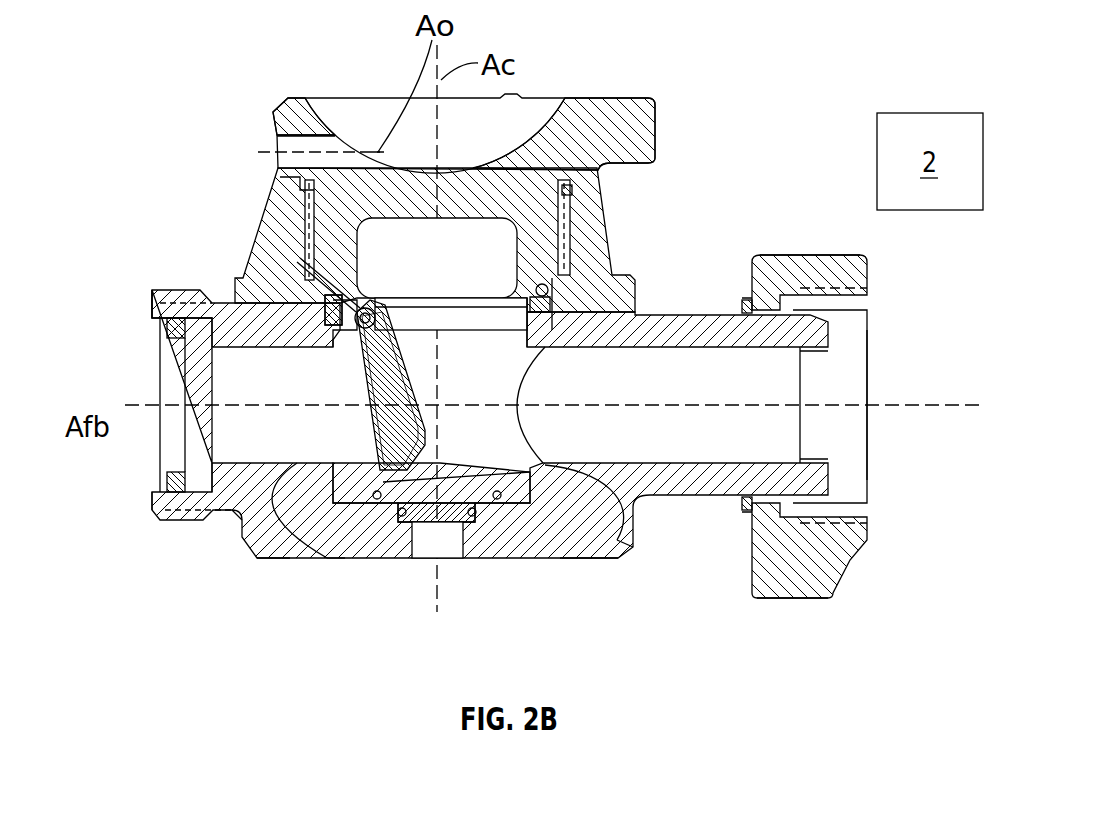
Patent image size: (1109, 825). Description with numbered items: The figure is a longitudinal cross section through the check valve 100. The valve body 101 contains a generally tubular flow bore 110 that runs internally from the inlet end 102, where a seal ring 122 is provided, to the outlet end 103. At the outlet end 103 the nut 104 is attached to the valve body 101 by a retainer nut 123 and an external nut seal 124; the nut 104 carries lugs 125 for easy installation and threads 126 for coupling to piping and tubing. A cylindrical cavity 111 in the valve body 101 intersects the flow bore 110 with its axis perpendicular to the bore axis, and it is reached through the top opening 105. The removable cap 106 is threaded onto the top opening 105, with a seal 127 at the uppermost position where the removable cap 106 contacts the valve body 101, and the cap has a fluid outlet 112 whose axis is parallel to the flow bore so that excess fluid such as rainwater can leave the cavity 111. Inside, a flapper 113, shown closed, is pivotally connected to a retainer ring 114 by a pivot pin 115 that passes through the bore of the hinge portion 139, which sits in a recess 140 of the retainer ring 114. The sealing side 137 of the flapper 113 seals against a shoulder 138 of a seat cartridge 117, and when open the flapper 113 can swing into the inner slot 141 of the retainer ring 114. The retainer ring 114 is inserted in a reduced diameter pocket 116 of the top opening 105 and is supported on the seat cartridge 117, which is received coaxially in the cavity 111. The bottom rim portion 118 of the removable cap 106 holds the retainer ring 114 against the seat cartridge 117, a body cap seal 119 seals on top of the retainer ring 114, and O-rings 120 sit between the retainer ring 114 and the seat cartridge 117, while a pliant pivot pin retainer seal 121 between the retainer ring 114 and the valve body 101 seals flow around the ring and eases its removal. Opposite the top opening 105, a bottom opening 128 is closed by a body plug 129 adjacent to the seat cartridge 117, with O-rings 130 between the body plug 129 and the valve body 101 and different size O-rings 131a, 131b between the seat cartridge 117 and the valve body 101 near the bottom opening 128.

The check valve 100 is at (744, 82).
The valve body 101 is at (647, 497).
The inlet end 102 is at (150, 345).
The outlet end 103 is at (838, 348).
The nut 104 is at (790, 255).
The top opening 105 is at (303, 213).
The removable cap 106 is at (300, 97).
The flow bore 110 is at (712, 451).
The cavity 111 is at (528, 387).
The fluid outlet 112 is at (332, 143).
The flapper 113 is at (360, 410).
The retainer ring 114 is at (552, 305).
The pivot pin 115 is at (355, 300).
The reduced diameter pocket 116 is at (325, 320).
The seat cartridge 117 is at (592, 558).
The bottom rim portion 118 is at (567, 192).
The body cap seal 119 is at (548, 292).
The O-rings 120 is at (556, 328).
The pivot pin retainer seal 121 is at (337, 293).
The seal ring 122 is at (158, 483).
The retainer nut 123 is at (742, 308).
The external nut seal 124 is at (746, 300).
The lugs 125 is at (762, 600).
The threads 126 is at (868, 400).
The seal 127 is at (280, 177).
The bottom opening 128 is at (450, 556).
The body plug 129 is at (430, 522).
The O-rings 130 is at (475, 522).
The O-ring 131a is at (238, 512).
The O-ring 131b is at (345, 556).
The sealing side 137 is at (353, 387).
The shoulder 138 is at (273, 556).
The hinge portion 139 is at (337, 348).
The recess 140 is at (357, 295).
The inner slot 141 is at (468, 318).